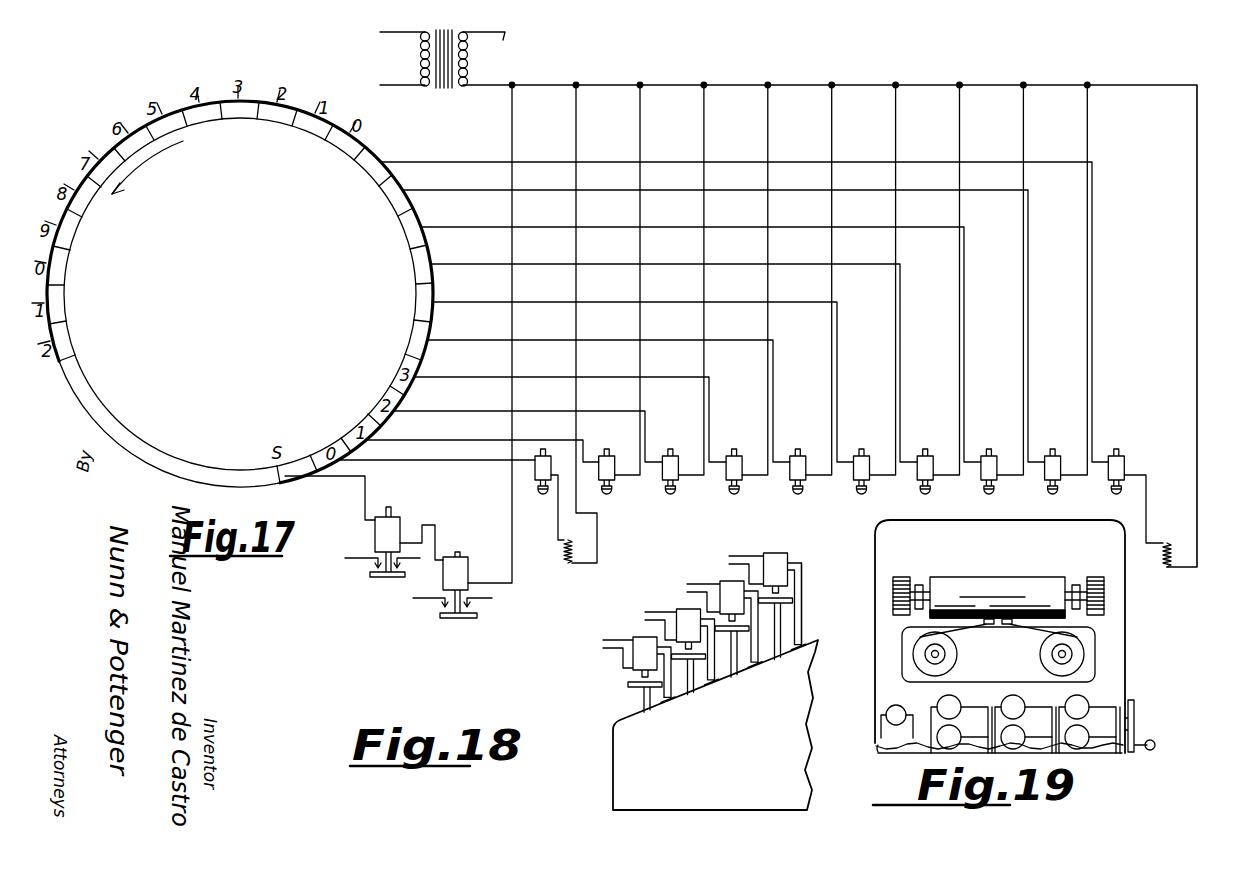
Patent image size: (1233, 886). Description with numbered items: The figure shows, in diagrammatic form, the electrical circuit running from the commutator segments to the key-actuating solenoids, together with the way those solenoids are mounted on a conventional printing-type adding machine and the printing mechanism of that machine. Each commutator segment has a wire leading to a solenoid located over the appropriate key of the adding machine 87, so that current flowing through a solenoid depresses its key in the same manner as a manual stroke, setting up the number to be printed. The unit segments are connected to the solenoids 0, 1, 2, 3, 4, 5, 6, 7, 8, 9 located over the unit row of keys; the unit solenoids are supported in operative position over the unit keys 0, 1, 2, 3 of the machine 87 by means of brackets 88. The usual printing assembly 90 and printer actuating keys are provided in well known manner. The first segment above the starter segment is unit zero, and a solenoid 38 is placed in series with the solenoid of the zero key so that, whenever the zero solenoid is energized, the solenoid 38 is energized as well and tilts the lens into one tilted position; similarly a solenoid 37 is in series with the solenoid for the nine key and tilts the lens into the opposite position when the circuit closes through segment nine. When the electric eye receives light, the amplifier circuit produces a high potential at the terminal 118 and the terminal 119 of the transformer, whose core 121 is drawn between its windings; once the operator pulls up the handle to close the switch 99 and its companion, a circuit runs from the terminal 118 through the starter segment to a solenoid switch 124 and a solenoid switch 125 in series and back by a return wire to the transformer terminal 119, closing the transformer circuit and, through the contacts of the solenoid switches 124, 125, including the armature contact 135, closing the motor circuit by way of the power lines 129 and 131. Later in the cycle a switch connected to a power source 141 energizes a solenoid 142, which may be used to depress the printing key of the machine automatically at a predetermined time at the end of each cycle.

In FIG. 17, the terminal 118 is at (503, 34).
In FIG. 17, the transformer terminal 119 is at (478, 88).
In FIG. 17, the transformer core 121 is at (445, 93).
In FIG. 17, the solenoid switch 124 is at (376, 522).
In FIG. 17, the solenoid switch 125 is at (462, 577).
In FIG. 17, the switch 99 is at (353, 560).
In FIG. 17, the armature plate 135 is at (413, 559).
In FIG. 17, the power line 131 is at (420, 600).
In FIG. 17, the power line 129 is at (485, 599).
In FIG. 17, the solenoid 38 is at (562, 548).
In FIG. 17, the solenoid 37 is at (1172, 546).
In FIG. 17, the unit key 0 is at (540, 462).
In FIG. 18, the unit key 0 is at (657, 709).
In FIG. 17, the unit key 1 is at (604, 462).
In FIG. 18, the unit key 1 is at (701, 689).
In FIG. 17, the unit key 2 is at (667, 462).
In FIG. 18, the unit key 2 is at (745, 669).
In FIG. 17, the unit key 3 is at (731, 462).
In FIG. 18, the unit key 3 is at (789, 649).
In FIG. 17, the relay 4 is at (795, 462).
In FIG. 17, the relay 5 is at (858, 462).
In FIG. 17, the relay 6 is at (922, 462).
In FIG. 17, the relay 7 is at (986, 462).
In FIG. 17, the relay 8 / key button 8 is at (1050, 462).
In FIG. 19, the relay 8 / key button 8 is at (944, 740).
In FIG. 17, the relay 9 / key button 9 is at (1113, 462).
In FIG. 19, the relay 9 / key button 9 is at (944, 710).
In FIG. 18, the bracket 88 is at (803, 625).
In FIG. 18, the machine 87 is at (797, 768).
In FIG. 19, the machine 87 is at (1113, 652).
In FIG. 19, the printing assembly 90 is at (1026, 583).
In FIG. 19, the solenoid 142 is at (889, 708).
In FIG. 19, the power source 141 is at (882, 750).